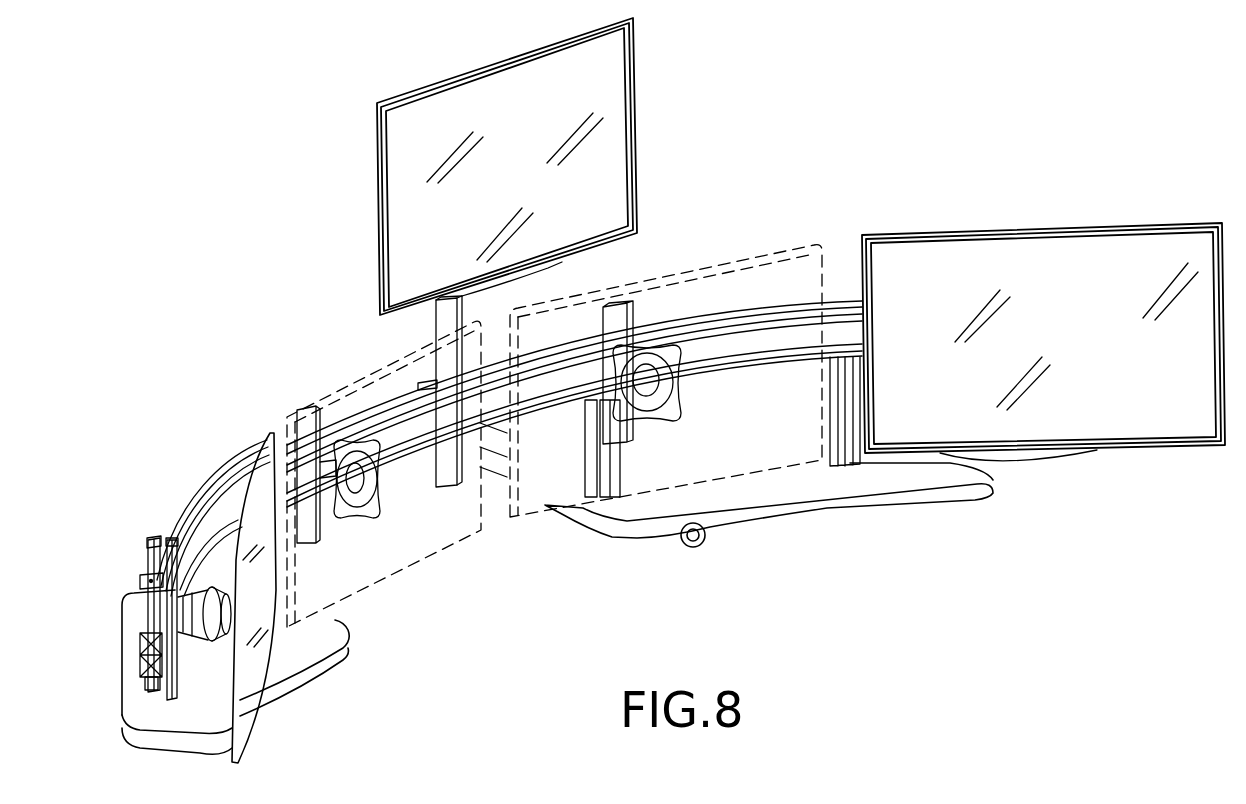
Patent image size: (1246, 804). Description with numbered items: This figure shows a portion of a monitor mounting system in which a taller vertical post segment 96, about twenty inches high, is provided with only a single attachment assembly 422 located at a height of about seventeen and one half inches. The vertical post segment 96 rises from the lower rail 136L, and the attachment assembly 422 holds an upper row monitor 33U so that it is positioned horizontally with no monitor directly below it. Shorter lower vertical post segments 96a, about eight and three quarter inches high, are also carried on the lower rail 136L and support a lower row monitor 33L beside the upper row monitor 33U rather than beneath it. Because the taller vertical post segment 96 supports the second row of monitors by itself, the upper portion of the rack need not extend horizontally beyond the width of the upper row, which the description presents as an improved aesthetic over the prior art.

The upper row monitor 33U is at (622, 173).
The lower row monitor 33L is at (1065, 252).
The vertical post segment 96 is at (448, 317).
The lower vertical post segment 96a is at (843, 467).
The attachment assembly 422 is at (660, 362).
The lower rail 136L is at (140, 613).